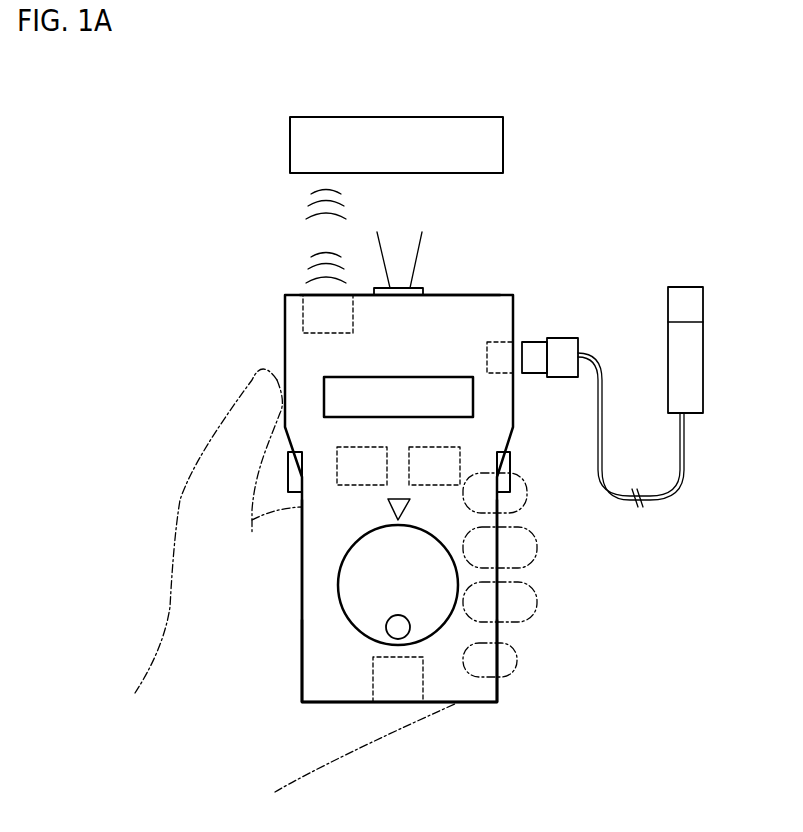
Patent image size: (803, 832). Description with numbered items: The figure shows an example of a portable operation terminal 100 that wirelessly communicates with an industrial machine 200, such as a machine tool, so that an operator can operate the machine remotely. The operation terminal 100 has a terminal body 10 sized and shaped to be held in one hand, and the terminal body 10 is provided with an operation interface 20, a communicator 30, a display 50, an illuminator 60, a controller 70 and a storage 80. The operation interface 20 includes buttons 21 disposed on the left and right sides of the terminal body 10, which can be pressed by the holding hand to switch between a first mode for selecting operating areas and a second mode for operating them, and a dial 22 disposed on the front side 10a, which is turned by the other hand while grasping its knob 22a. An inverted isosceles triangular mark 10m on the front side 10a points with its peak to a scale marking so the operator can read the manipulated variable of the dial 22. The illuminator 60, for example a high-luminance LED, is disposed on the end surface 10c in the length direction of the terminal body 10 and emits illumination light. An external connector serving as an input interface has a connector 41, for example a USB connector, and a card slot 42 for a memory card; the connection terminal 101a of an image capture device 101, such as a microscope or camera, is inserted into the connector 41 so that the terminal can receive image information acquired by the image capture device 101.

The industrial machine 200 is at (290, 137).
The operation terminal 100 is at (266, 298).
The terminal body 10 is at (513, 303).
The front side 10a is at (330, 668).
The end surface 10c is at (467, 295).
The mark 10m is at (403, 508).
The illuminator 60 is at (415, 288).
The communicator 30 is at (305, 328).
The display 50 is at (333, 398).
The connector 41 is at (502, 375).
The card slot 42 is at (405, 693).
The controller 70 is at (340, 485).
The storage 80 is at (448, 463).
The buttons 21 is at (288, 475).
The dial 22 is at (447, 578).
The knob 22a is at (400, 628).
The operation interface 20 is at (437, 658).
The image capture device 101 is at (696, 375).
The connection terminal 101a is at (562, 347).